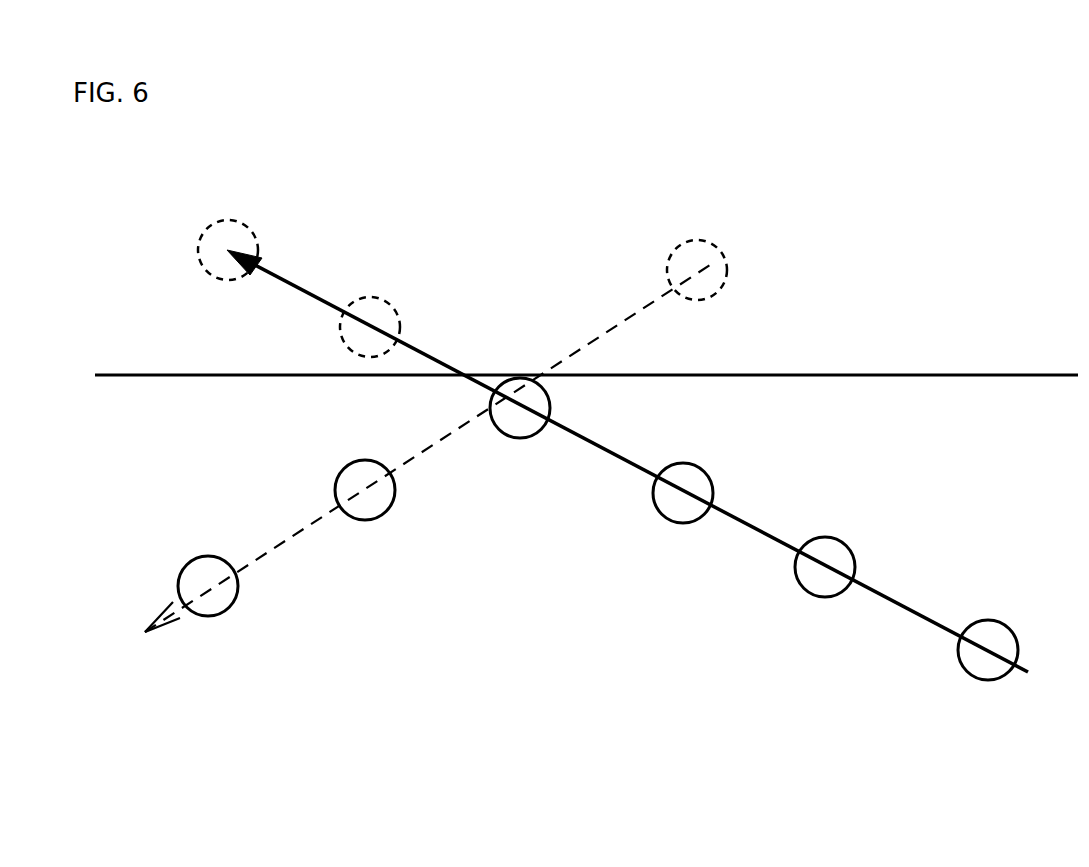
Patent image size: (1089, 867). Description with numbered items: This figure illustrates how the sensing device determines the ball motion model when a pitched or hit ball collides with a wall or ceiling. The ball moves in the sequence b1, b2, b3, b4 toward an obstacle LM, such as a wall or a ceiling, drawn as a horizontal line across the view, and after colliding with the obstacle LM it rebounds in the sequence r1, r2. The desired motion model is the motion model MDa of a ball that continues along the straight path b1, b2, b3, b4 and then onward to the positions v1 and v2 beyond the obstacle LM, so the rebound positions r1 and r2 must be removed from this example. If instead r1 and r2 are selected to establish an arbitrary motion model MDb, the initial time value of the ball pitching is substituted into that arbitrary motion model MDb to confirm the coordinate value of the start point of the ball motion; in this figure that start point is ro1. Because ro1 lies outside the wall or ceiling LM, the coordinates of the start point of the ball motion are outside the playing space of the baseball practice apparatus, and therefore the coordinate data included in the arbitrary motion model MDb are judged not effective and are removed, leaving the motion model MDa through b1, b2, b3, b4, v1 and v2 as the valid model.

The obstacle LM is at (860, 381).
The motion model MDa is at (892, 603).
The arbitrary motion model MDb is at (288, 537).
The ball position b1 is at (988, 679).
The ball position b2 is at (825, 592).
The ball position b3 is at (683, 518).
The ball position b4 is at (520, 433).
The rebound ball position r1 is at (365, 511).
The rebound ball position r2 is at (208, 609).
The ball position of desired motion model v1 is at (370, 306).
The ball position of desired motion model v2 is at (228, 229).
The start point of ball motion ro1 is at (697, 250).